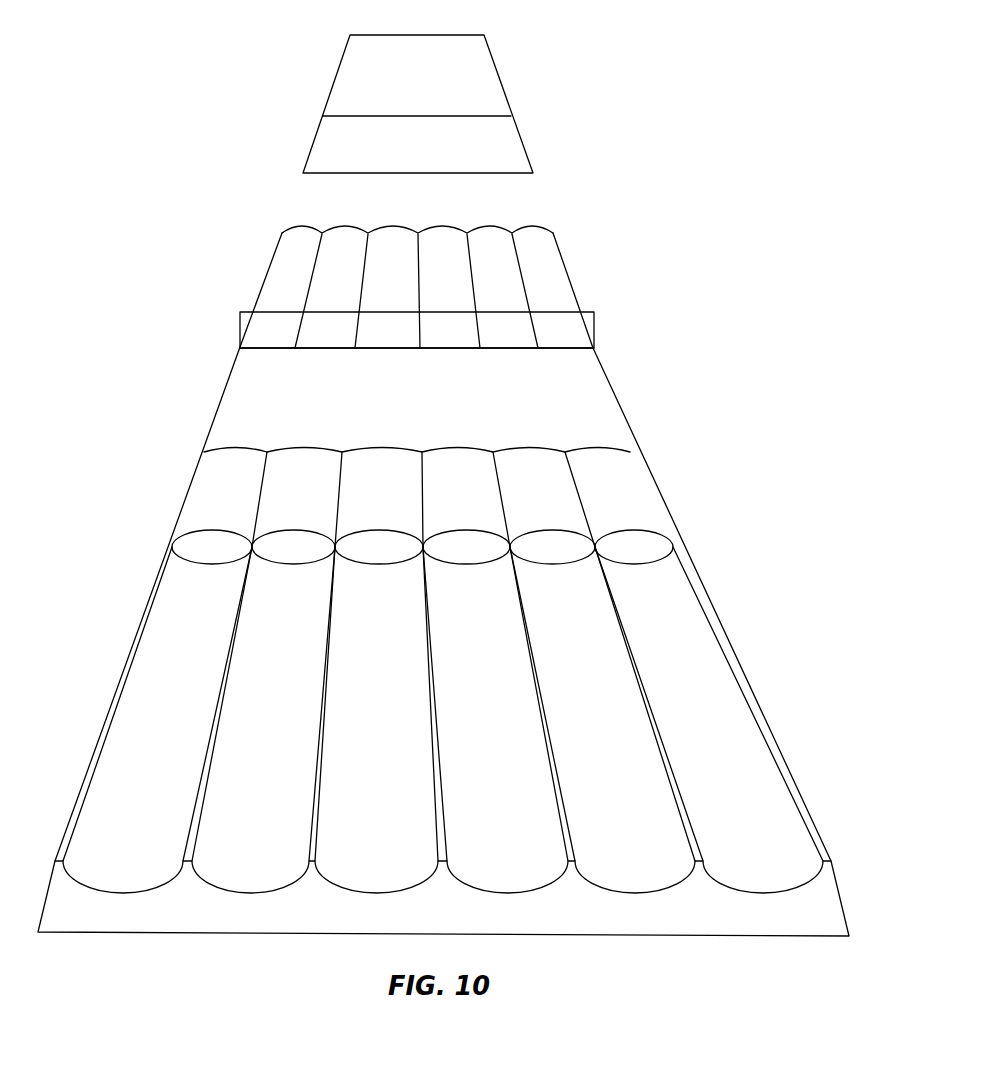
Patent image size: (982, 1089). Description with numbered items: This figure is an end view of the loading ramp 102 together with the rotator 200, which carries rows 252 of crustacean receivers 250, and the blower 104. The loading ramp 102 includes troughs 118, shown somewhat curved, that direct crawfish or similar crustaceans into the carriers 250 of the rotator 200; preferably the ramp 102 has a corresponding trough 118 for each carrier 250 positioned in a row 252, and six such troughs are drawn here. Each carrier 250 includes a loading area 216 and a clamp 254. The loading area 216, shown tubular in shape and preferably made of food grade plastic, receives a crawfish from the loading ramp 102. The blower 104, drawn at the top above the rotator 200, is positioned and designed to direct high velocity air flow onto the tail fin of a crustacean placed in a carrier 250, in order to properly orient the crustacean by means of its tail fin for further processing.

The loading ramp 102 is at (789, 758).
The blower 104 is at (316, 138).
The troughs 118 is at (109, 823).
The rotator 200 is at (445, 418).
The loading area 216 is at (380, 545).
The crustacean receivers 250 is at (200, 515).
The rows 252 is at (266, 261).
The clamp 254 is at (597, 319).